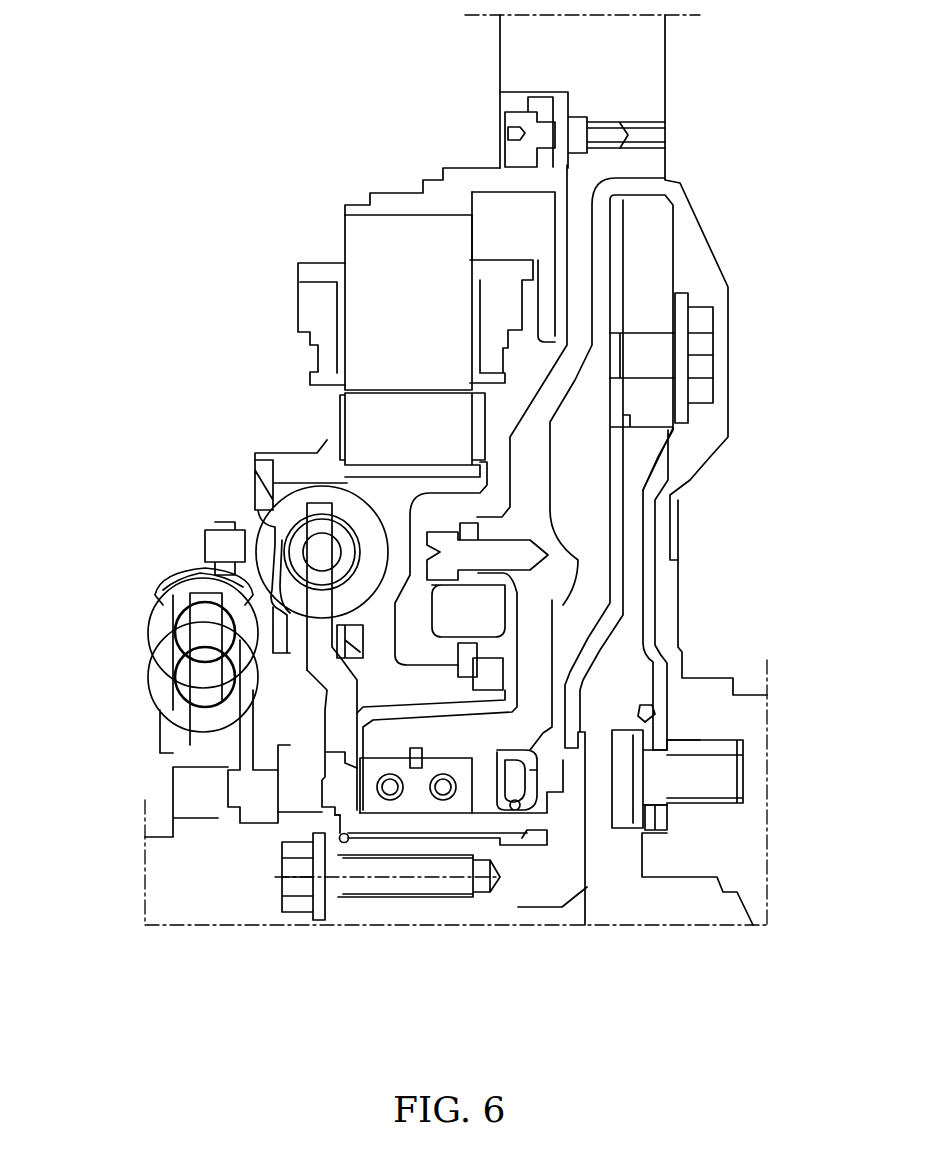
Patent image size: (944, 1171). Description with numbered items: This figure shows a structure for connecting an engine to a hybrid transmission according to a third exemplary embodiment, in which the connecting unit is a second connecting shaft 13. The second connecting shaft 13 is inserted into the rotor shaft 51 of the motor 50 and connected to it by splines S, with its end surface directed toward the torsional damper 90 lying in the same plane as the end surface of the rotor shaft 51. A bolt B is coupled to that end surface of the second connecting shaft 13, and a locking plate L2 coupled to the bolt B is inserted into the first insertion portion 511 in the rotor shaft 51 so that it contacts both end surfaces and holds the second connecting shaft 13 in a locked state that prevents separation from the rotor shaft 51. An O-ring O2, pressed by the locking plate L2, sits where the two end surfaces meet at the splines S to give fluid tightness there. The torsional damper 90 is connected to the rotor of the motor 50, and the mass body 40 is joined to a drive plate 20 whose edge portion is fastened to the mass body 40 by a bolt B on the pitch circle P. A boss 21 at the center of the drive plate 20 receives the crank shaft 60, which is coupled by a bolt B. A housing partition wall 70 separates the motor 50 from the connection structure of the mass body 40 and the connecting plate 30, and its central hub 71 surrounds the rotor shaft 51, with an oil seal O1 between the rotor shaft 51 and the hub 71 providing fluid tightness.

The motor 50 is at (335, 228).
The mass body 40 is at (657, 222).
The housing partition wall 70 is at (562, 378).
The connecting plate 30 is at (612, 480).
The drive plate 20 is at (650, 563).
The oil seal O1 is at (537, 783).
The bolt B is at (725, 775).
The boss 21 is at (663, 815).
The crank shaft 60 is at (740, 868).
The rotor shaft 51 is at (547, 825).
The first insertion portion 511 is at (333, 817).
The splines S is at (500, 837).
The second connecting shaft 13 is at (485, 913).
The pitch circle P is at (387, 877).
The locking plate L2 is at (328, 920).
The O-ring O2 is at (339, 843).
The hub 71 is at (373, 740).
The torsional damper 90 is at (168, 562).